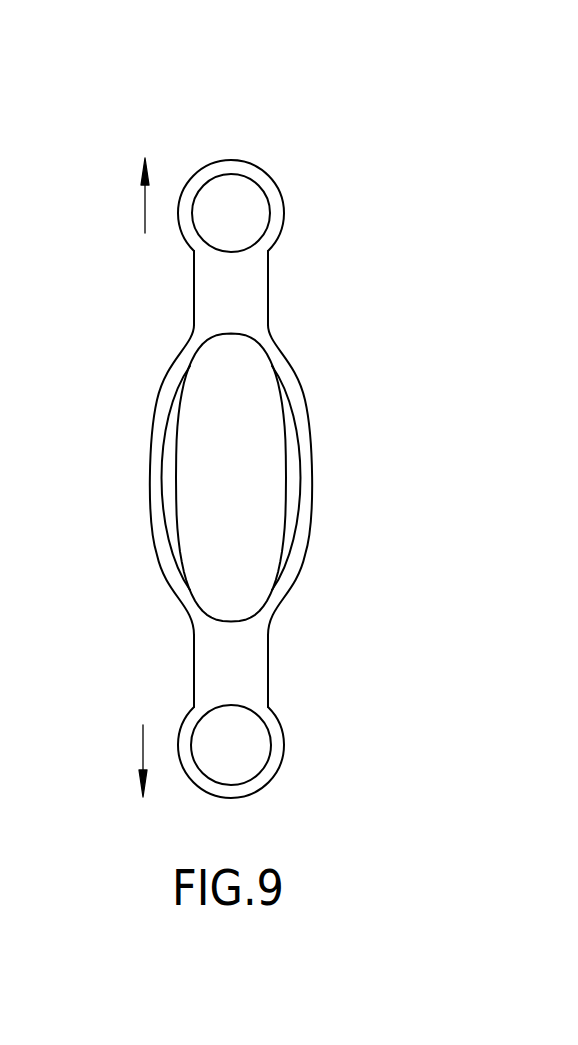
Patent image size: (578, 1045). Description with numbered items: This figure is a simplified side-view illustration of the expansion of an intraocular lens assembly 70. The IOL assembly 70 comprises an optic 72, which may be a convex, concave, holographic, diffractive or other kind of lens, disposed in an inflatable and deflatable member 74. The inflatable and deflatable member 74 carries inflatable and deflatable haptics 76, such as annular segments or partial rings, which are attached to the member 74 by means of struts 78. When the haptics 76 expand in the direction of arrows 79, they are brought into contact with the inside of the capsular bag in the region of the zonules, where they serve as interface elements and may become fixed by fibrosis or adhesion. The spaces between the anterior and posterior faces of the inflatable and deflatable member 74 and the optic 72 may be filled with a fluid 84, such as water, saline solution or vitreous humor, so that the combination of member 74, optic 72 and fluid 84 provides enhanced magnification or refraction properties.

The IOL assembly 70 is at (275, 417).
The optic 72 is at (257, 444).
The inflatable and deflatable member 74 is at (300, 550).
The inflatable and deflatable haptics 76 is at (279, 203).
The struts 78 is at (260, 299).
The arrows 79 is at (145, 203).
The fluid 84 is at (293, 490).